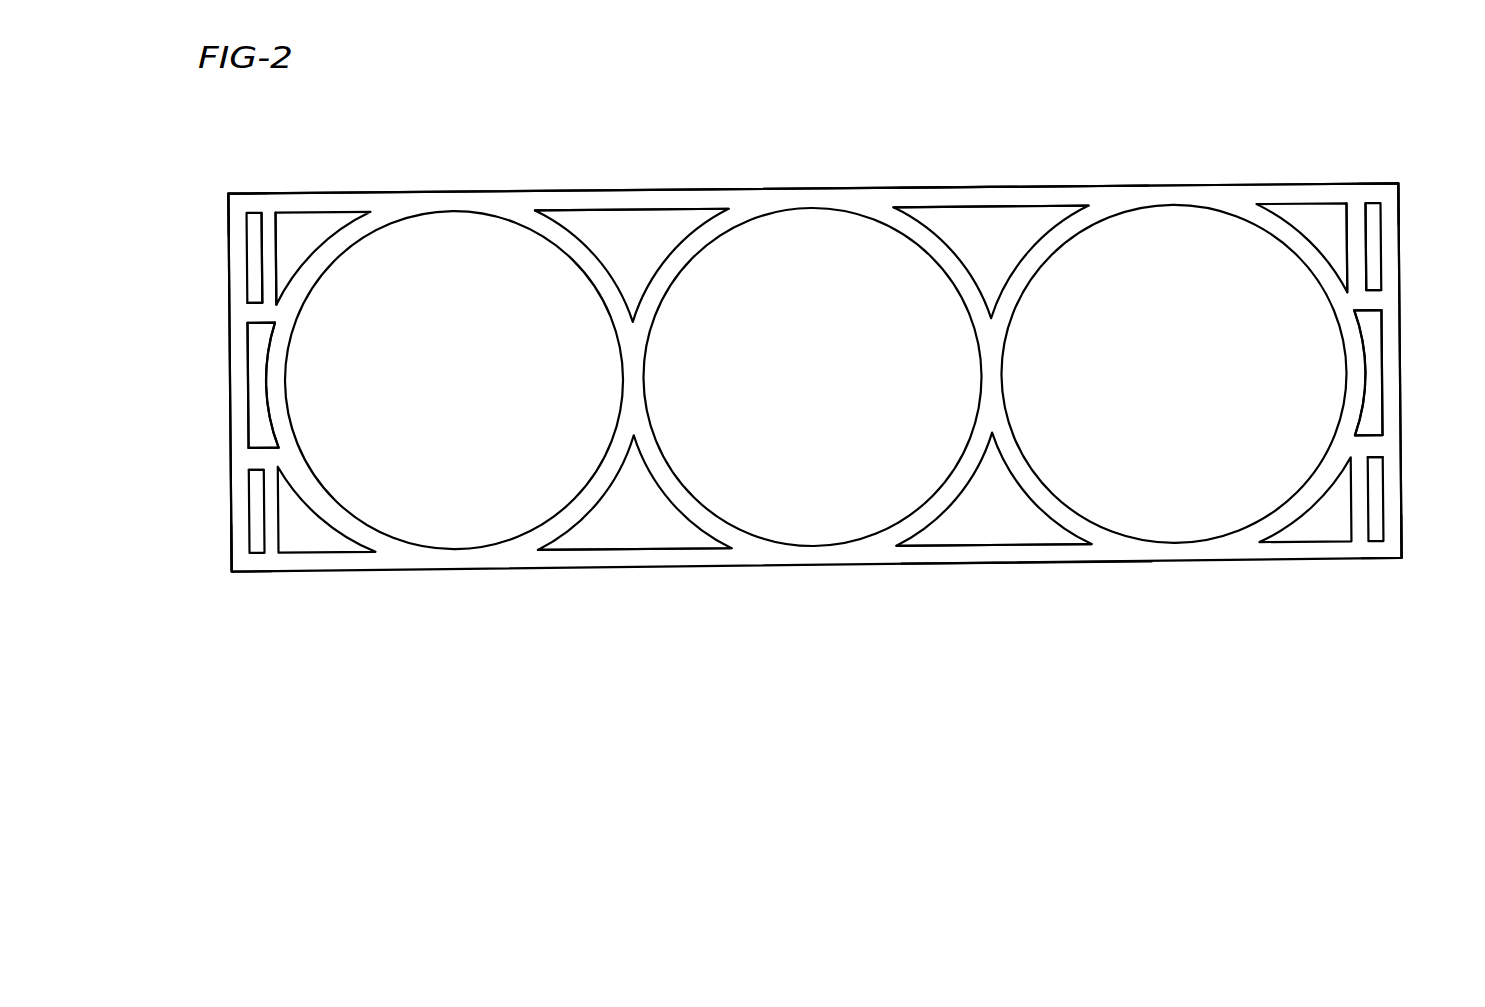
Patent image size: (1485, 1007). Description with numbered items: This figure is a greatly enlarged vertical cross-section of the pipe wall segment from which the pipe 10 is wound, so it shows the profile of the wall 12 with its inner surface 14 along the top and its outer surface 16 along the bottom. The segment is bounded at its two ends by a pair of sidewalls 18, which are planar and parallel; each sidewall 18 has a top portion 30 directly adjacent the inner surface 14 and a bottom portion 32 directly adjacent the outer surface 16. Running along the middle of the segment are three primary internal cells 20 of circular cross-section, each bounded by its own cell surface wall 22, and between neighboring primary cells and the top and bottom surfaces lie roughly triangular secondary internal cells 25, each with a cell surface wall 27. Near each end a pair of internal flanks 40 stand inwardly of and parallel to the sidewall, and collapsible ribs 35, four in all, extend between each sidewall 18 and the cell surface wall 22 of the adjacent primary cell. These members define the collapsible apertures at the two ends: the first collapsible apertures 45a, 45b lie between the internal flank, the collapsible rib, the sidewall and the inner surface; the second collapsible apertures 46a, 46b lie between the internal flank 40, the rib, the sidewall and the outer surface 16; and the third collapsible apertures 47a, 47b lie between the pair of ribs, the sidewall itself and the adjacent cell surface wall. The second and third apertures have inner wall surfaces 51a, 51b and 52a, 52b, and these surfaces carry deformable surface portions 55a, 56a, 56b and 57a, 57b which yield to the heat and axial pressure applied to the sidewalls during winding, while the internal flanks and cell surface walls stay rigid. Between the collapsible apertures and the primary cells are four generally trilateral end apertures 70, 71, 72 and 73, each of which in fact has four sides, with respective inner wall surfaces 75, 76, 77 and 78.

The pipe 10 is at (522, 152).
The wall 12 is at (634, 186).
The inner surface 14 is at (1030, 188).
The outer surface 16 is at (1000, 563).
The sidewall 18 is at (226, 371).
The primary internal cell 20 is at (424, 232).
The cell surface wall 22 is at (406, 521).
The secondary internal cell 25 is at (676, 212).
The cell surface wall 27 is at (590, 212).
The top portion 30 is at (233, 198).
The bottom portion 32 is at (232, 556).
The collapsible rib 35 is at (256, 307).
The internal flank 40 is at (278, 242).
The first collapsible aperture 45a is at (254, 250).
The first collapsible aperture 45b is at (1373, 205).
The second collapsible aperture 46a is at (293, 412).
The second collapsible aperture 46b is at (1370, 527).
The third collapsible aperture 47a is at (256, 397).
The third collapsible aperture 47b is at (1372, 385).
The inner wall surface 51a is at (260, 513).
The inner wall surface 51b is at (1372, 234).
The inner wall surface 52a is at (266, 410).
The inner wall surface 52b is at (1375, 394).
The deformable surface portion 55a is at (247, 212).
The deformable surface portion 56a is at (258, 478).
The deformable surface portion 56b is at (1360, 503).
The deformable surface portion 57a is at (262, 324).
The deformable surface portion 57b is at (1372, 327).
The end aperture 70 is at (323, 222).
The end aperture 71 is at (335, 516).
The end aperture 72 is at (1282, 211).
The end aperture 73 is at (1290, 503).
The inner wall surface 75 is at (296, 246).
The inner wall surface 76 is at (320, 545).
The inner wall surface 77 is at (1290, 216).
The inner wall surface 78 is at (1317, 537).